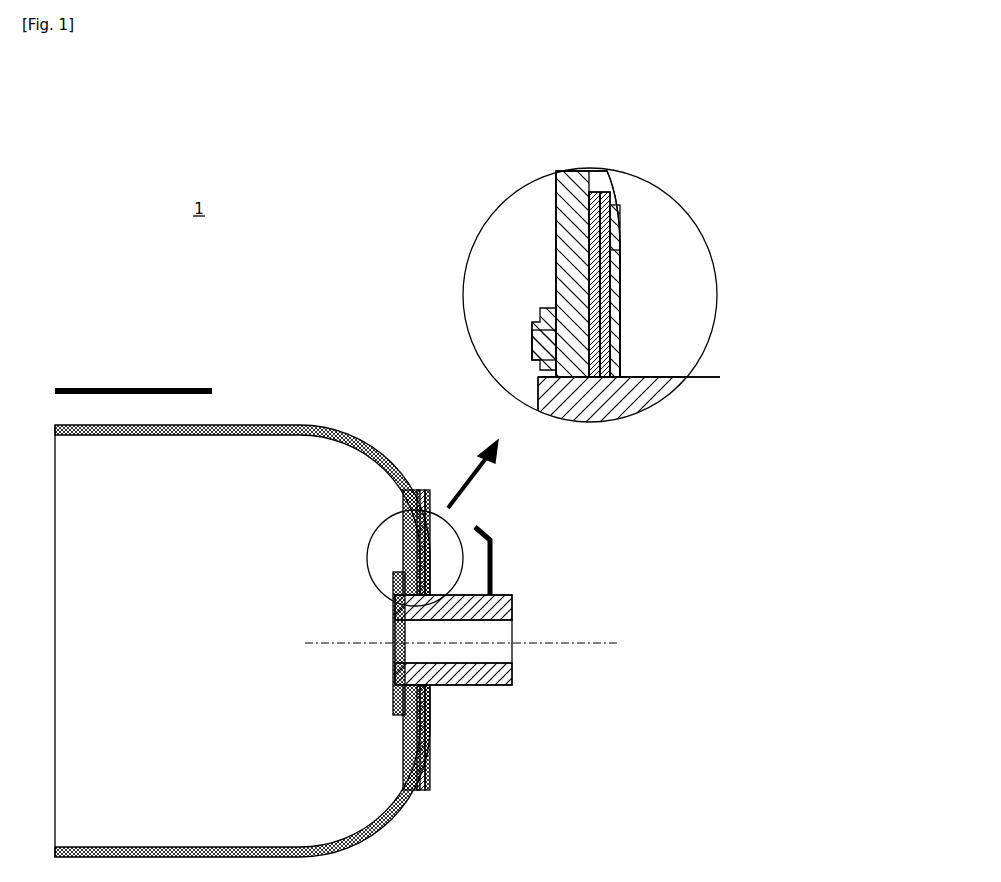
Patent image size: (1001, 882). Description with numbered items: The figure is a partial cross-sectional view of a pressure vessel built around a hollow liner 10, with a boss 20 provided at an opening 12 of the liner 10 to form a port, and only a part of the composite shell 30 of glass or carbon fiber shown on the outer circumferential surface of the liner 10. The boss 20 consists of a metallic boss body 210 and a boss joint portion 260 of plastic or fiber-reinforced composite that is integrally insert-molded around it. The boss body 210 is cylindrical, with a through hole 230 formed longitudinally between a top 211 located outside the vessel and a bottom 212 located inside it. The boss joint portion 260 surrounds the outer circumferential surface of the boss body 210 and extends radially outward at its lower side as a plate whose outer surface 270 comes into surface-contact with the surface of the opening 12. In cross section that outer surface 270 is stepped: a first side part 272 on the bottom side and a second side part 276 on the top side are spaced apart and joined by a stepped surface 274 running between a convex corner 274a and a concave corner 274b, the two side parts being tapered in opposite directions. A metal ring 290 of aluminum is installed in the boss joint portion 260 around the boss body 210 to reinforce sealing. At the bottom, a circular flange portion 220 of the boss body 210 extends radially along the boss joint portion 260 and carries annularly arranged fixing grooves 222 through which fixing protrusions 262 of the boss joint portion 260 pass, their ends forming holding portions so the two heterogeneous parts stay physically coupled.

The liner 10 is at (258, 425).
The opening 12 is at (428, 525).
The boss 20 is at (500, 703).
The composite shell 30 is at (120, 408).
The boss body 210 is at (515, 605).
The top 211 is at (512, 675).
The bottom 212 is at (395, 665).
The flange portion 220 is at (548, 320).
The fixing groove 222 is at (550, 338).
The through hole 230 is at (510, 640).
The boss joint portion 260 is at (430, 720).
The fixing protrusion 262 is at (540, 340).
The outer surface 270 is at (700, 146).
The first side part 272 is at (578, 171).
The stepped surface 274 is at (612, 175).
The convex corner 274a is at (556, 240).
The concave corner 274b is at (556, 262).
The second side part 276 is at (625, 192).
The metal ring 290 is at (430, 700).